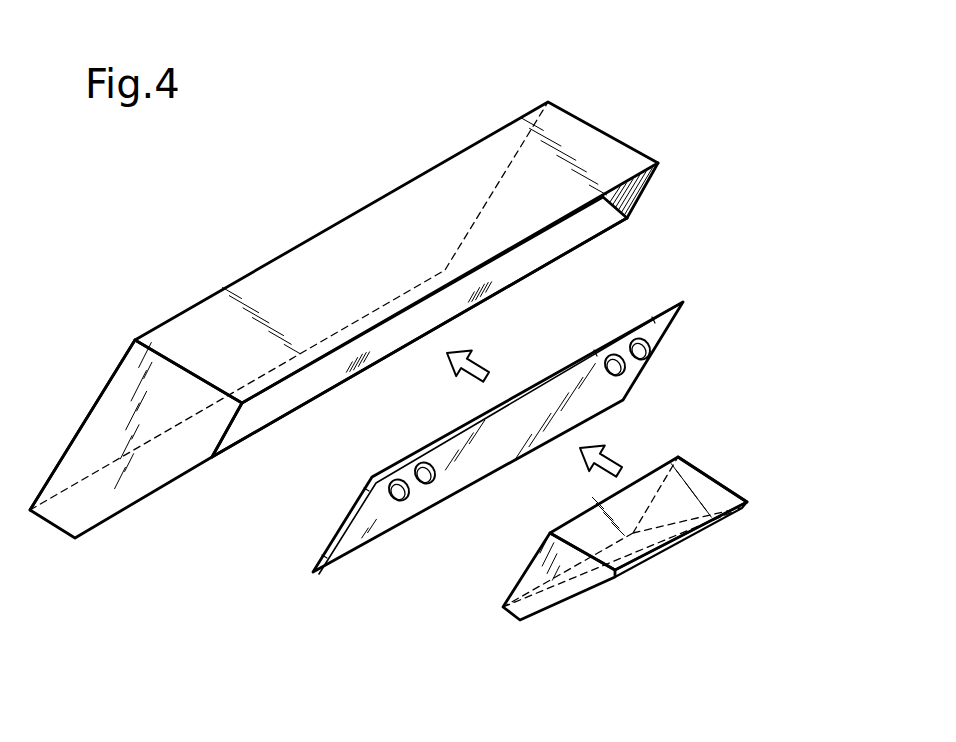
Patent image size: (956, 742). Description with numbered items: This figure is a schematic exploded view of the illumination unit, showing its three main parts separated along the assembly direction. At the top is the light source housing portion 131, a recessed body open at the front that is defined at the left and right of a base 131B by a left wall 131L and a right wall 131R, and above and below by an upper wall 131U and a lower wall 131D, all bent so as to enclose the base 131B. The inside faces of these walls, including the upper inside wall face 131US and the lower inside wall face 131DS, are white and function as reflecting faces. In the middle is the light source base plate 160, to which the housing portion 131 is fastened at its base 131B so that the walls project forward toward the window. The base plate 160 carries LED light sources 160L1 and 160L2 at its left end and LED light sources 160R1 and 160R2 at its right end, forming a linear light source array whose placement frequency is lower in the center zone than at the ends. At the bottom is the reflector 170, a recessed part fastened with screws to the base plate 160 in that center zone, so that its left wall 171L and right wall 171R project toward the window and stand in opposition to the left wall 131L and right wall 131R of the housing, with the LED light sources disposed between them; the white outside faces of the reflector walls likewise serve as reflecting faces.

The light source housing portion 131 is at (418, 325).
The upper wall 131U is at (408, 208).
The upper inside wall face 131US is at (363, 345).
The base 131B is at (105, 387).
The left wall 131L is at (179, 453).
The lower wall 131D is at (277, 410).
The lower inside wall face 131DS is at (303, 385).
The right wall 131R is at (587, 228).
The light source base plate 160 is at (560, 477).
The LED light source 160L1 is at (403, 502).
The LED light source 160L2 is at (430, 483).
The LED light source 160R1 is at (655, 348).
The LED light source 160R2 is at (623, 370).
The reflector 170 is at (705, 548).
The right wall of reflector 171R is at (715, 480).
The left wall of reflector 171L is at (572, 590).